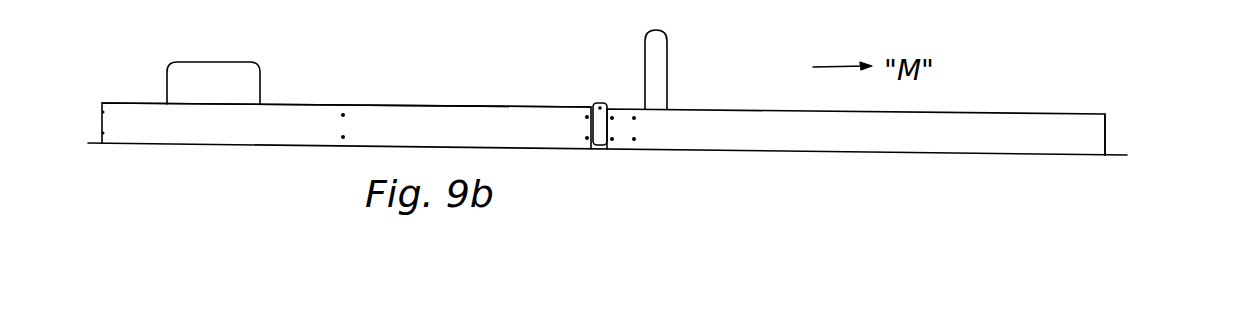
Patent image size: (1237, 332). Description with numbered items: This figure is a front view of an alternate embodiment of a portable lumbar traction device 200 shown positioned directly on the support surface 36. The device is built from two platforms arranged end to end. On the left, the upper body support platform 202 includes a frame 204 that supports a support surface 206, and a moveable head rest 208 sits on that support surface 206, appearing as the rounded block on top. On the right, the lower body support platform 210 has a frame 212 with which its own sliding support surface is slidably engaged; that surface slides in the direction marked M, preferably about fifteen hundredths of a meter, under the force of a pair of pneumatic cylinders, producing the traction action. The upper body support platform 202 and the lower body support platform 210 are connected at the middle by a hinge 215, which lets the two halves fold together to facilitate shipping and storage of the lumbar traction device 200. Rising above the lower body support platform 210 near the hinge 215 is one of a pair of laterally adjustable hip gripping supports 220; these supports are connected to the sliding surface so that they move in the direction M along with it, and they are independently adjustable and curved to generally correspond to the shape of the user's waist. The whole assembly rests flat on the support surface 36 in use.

The portable lumbar traction device 200 is at (1132, 135).
The upper body support platform 202 is at (278, 147).
The frame 204 is at (383, 128).
The support surface 206 is at (303, 103).
The moveable head rest 208 is at (210, 62).
The lower body support platform 210 is at (768, 150).
The frame 212 is at (970, 142).
The hinge 215 is at (598, 103).
The hip gripping support 220 is at (662, 53).
The support surface 36 is at (1117, 158).